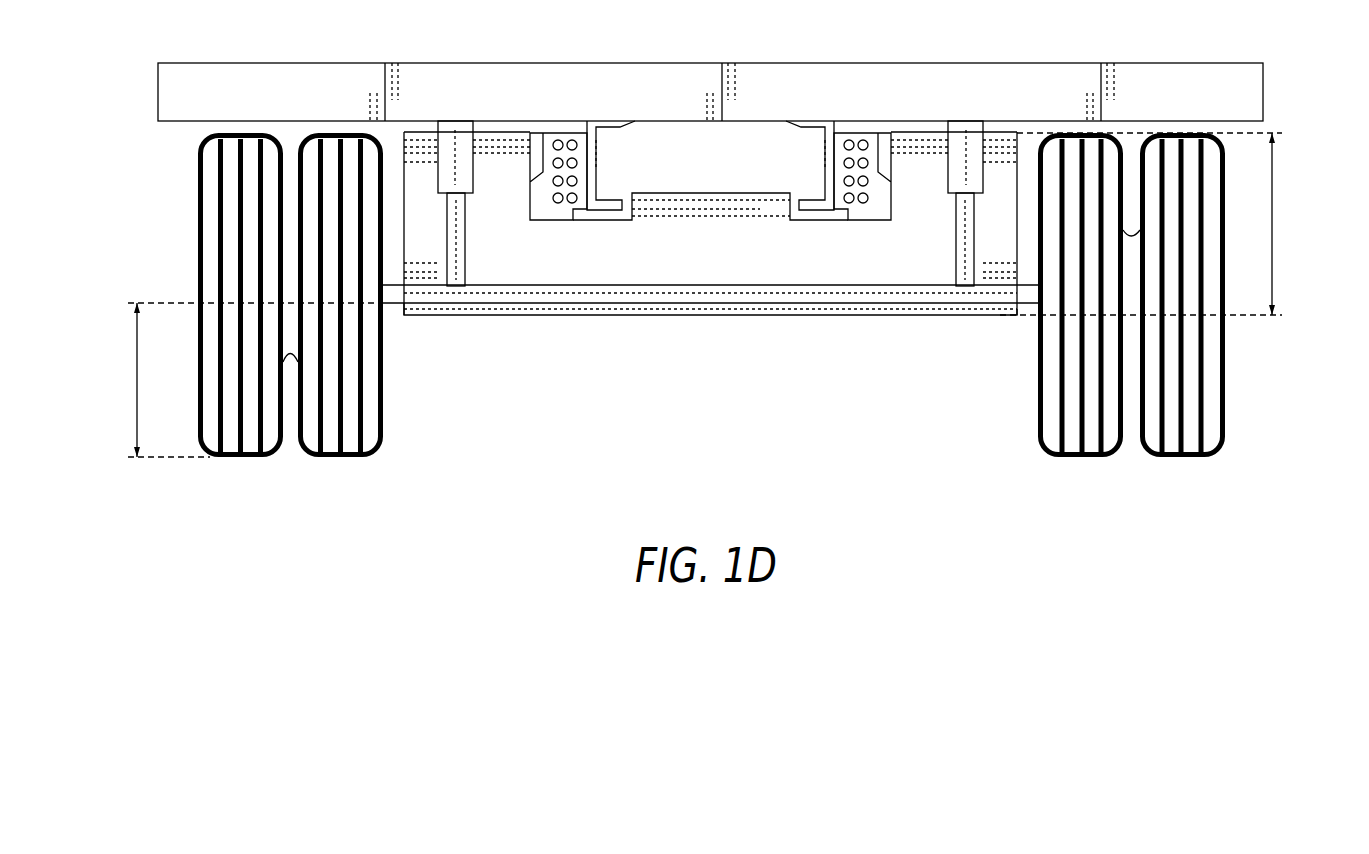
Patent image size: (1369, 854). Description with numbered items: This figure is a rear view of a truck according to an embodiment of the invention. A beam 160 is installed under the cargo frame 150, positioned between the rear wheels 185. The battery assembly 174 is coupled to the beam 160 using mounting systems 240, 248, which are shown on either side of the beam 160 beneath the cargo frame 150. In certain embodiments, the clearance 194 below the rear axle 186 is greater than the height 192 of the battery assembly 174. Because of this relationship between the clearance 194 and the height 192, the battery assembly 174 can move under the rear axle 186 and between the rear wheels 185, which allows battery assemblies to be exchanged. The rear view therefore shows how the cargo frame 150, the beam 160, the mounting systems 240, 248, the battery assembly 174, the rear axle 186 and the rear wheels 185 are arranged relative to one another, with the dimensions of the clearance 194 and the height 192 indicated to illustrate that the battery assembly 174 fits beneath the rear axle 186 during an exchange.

The cargo frame 150 is at (240, 63).
The mounting system 248 is at (563, 133).
The beam 160 is at (638, 119).
The mounting system 240 is at (860, 133).
The rear wheels 185 is at (383, 378).
The rear axle 186 is at (802, 297).
The battery assembly 174 is at (873, 317).
The height of the battery assembly 192 is at (1273, 226).
The clearance 194 is at (136, 380).